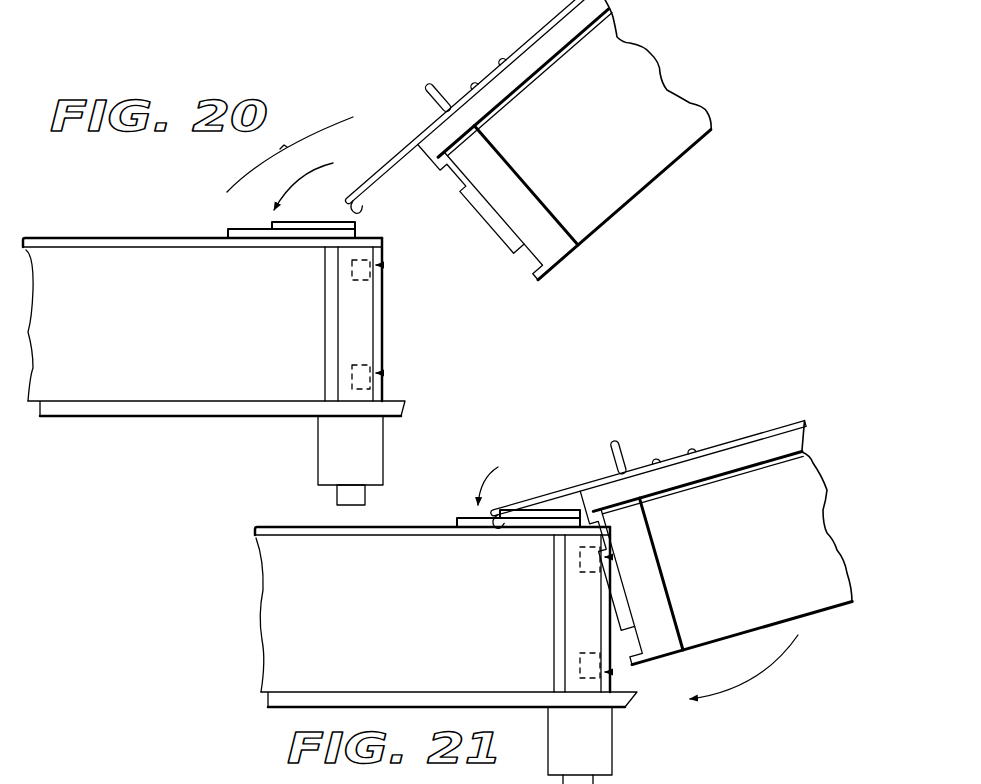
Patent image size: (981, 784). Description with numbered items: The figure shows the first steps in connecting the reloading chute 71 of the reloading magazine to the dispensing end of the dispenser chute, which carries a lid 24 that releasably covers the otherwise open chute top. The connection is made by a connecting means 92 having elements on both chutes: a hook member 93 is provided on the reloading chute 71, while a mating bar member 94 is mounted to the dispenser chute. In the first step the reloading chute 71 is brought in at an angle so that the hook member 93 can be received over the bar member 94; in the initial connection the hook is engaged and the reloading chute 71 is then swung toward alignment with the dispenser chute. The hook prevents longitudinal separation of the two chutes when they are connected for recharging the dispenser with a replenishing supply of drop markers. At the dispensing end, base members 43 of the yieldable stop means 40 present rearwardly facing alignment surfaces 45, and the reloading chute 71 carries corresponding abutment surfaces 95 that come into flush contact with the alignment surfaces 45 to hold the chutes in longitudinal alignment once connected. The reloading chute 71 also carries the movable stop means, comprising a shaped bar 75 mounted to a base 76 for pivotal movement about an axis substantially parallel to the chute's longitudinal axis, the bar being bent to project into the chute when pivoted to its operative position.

In FIG. 20, the lid 24 is at (133, 238).
In FIG. 21, the lid 24 is at (413, 527).
In FIG. 20, the yieldable stop means 40 is at (384, 265).
In FIG. 21, the yieldable stop means 40 is at (622, 678).
In FIG. 20, the base members 43 is at (348, 324).
In FIG. 21, the base members 43 is at (568, 628).
In FIG. 20, the alignment surfaces 45 is at (383, 320).
In FIG. 21, the alignment surfaces 45 is at (611, 648).
In FIG. 20, the reloading chute 71 is at (610, 190).
In FIG. 21, the reloading chute 71 is at (765, 488).
In FIG. 20, the shaped bar 75 is at (431, 85).
In FIG. 21, the shaped bar 75 is at (618, 432).
In FIG. 20, the base 76 is at (559, 245).
In FIG. 21, the base 76 is at (645, 552).
In FIG. 20, the connecting means 92 is at (389, 164).
In FIG. 21, the connecting means 92 is at (512, 515).
In FIG. 20, the hook member 93 is at (357, 200).
In FIG. 21, the hook member 93 is at (498, 522).
In FIG. 20, the bar member 94 is at (305, 222).
In FIG. 21, the bar member 94 is at (542, 510).
In FIG. 20, the abutment surfaces 95 is at (508, 217).
In FIG. 21, the abutment surfaces 95 is at (627, 590).